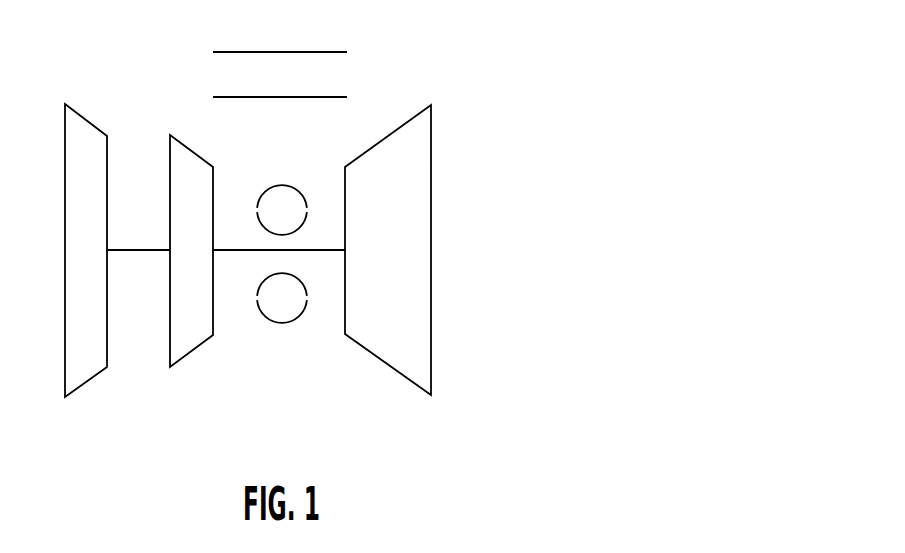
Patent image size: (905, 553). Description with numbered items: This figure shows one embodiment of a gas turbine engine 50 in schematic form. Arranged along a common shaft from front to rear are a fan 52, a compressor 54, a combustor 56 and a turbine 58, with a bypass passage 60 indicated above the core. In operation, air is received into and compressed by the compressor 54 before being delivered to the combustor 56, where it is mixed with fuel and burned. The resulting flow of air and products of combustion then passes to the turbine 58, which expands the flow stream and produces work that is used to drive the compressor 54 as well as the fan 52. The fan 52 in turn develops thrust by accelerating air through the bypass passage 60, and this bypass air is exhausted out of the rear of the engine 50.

The gas turbine engine 50 is at (473, 80).
The fan 52 is at (88, 383).
The compressor 54 is at (197, 349).
The combustor 56 is at (280, 323).
The turbine 58 is at (395, 372).
The bypass passage 60 is at (288, 84).